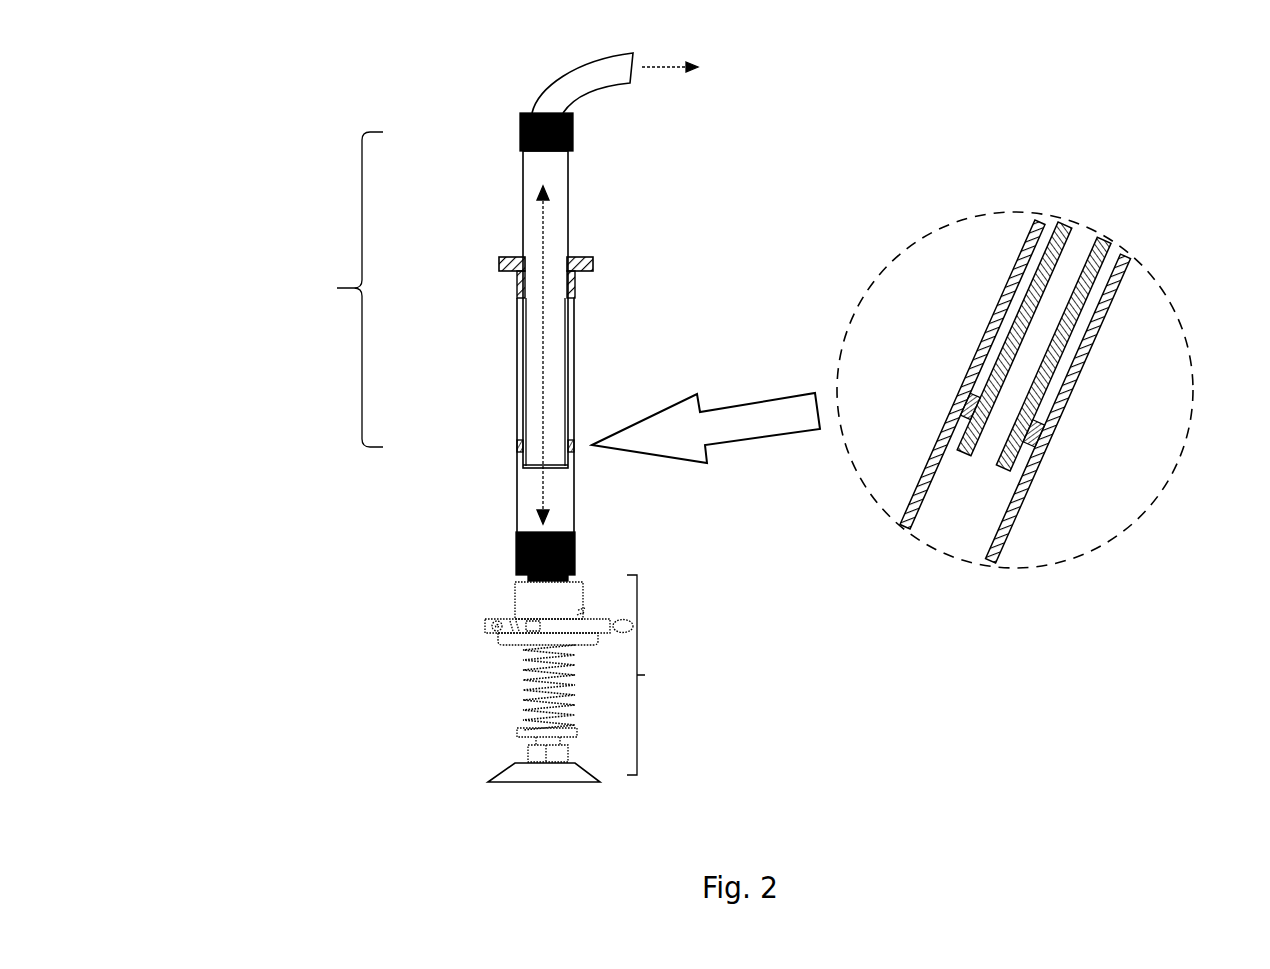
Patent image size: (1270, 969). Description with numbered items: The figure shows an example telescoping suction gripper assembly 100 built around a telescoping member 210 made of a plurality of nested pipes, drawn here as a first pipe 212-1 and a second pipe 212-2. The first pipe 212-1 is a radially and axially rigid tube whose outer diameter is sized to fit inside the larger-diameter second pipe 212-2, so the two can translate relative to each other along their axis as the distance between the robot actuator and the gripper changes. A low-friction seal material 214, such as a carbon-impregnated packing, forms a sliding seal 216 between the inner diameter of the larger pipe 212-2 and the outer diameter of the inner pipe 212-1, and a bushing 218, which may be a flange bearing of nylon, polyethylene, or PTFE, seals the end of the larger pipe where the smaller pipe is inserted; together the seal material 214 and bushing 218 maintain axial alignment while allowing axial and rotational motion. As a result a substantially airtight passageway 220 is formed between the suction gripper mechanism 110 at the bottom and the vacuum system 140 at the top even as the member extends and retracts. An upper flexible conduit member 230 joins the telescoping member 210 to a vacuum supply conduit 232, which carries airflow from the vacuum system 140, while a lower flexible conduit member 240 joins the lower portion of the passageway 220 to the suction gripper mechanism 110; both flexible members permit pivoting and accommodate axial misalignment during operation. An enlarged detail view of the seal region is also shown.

The telescoping suction gripper assembly 100 is at (286, 113).
The suction gripper mechanism 110 is at (645, 675).
The vacuum system 140 is at (731, 69).
The telescoping member 210 is at (342, 289).
The first pipe 212-1 is at (568, 188).
The second pipe 212-2 is at (574, 318).
The seal material 214 is at (572, 453).
The seal 216 is at (504, 446).
The bushing 218 is at (500, 260).
The airtight passageway 220 is at (543, 382).
The flexible conduit member 230 is at (520, 137).
The vacuum supply conduit 232 is at (560, 76).
The lower flexible conduit member 240 is at (515, 553).